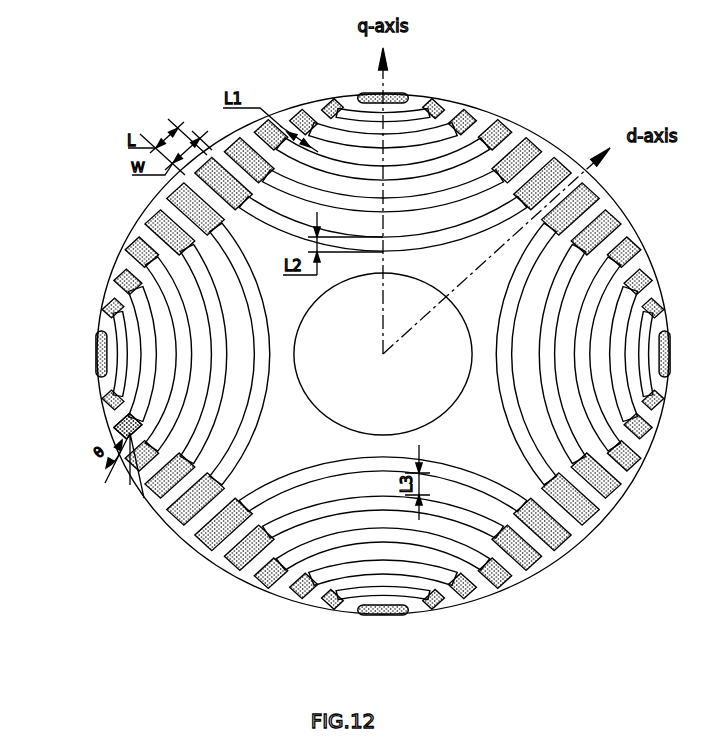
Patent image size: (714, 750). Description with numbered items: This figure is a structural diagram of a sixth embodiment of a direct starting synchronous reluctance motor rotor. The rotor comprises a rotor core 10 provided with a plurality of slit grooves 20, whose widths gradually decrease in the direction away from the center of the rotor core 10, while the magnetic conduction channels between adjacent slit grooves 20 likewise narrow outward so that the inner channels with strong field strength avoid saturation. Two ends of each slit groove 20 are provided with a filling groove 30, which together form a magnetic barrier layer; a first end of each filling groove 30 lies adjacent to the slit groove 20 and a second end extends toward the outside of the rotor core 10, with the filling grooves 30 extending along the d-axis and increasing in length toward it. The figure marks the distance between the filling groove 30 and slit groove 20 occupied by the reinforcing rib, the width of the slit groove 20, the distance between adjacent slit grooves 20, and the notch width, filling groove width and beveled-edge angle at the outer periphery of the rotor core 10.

The rotor core 10 is at (383, 354).
The slit groove 20 is at (183, 354).
The filling groove 30 is at (128, 437).